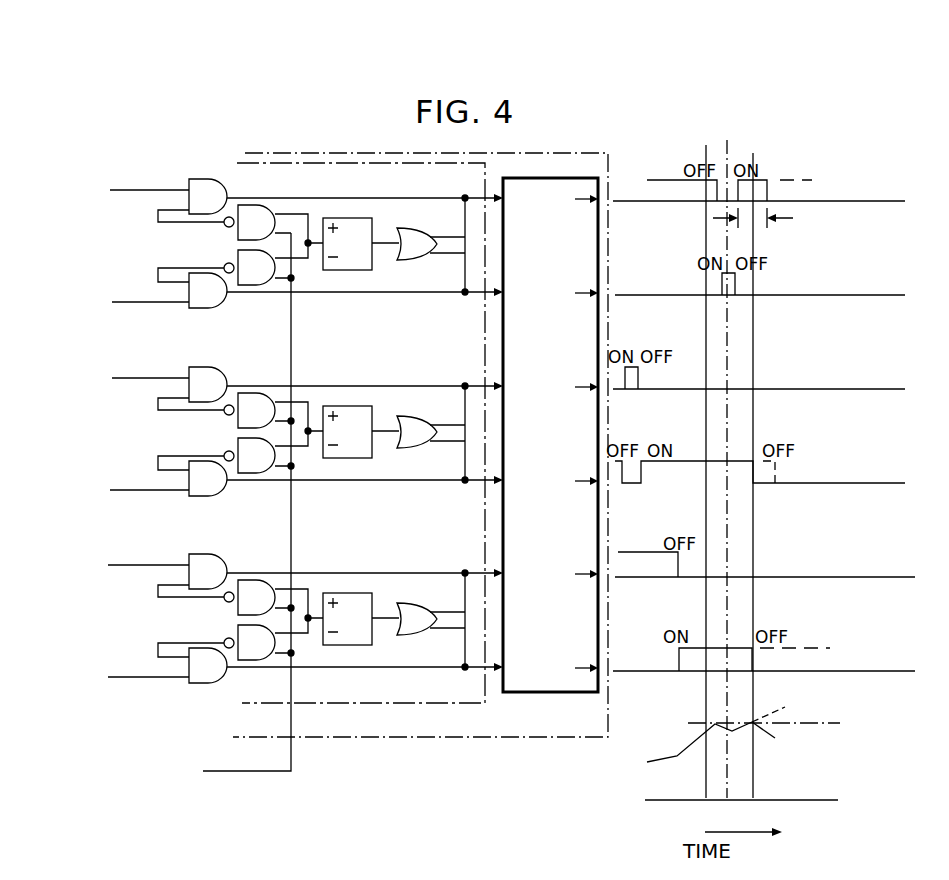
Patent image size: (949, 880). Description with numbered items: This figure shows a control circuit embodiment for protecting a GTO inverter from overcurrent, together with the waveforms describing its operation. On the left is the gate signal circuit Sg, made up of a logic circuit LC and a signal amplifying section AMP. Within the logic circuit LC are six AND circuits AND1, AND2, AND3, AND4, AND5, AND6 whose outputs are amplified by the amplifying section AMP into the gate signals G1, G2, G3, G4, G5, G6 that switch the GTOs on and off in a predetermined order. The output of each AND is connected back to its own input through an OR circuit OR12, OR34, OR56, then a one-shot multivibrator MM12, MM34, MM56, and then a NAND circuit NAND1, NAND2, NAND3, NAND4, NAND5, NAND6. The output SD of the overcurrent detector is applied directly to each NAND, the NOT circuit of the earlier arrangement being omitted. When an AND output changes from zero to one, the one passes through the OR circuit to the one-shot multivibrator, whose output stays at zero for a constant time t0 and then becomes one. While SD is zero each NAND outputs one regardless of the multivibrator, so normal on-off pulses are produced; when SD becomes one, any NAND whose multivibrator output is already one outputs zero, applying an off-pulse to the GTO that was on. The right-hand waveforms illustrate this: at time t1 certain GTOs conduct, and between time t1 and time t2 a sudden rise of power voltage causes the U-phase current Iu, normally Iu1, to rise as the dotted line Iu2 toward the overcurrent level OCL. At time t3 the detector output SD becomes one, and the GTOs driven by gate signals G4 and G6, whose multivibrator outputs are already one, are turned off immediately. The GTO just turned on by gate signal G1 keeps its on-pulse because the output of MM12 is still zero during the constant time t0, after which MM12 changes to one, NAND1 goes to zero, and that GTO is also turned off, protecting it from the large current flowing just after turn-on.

The AND circuit AND1 is at (200, 179).
The AND circuit AND2 is at (217, 308).
The AND circuit AND3 is at (210, 367).
The AND circuit AND4 is at (205, 496).
The AND circuit AND5 is at (207, 554).
The AND circuit AND6 is at (200, 683).
The NAND circuit NAND1 is at (258, 205).
The NAND circuit NAND2 is at (266, 286).
The NAND circuit NAND3 is at (263, 393).
The NAND circuit NAND4 is at (237, 442).
The NAND circuit NAND5 is at (263, 580).
The NAND circuit NAND6 is at (238, 625).
The one-shot multivibrator MM12 is at (360, 217).
The one-shot multivibrator MM34 is at (360, 405).
The one-shot multivibrator MM56 is at (360, 592).
The OR circuit OR12 is at (399, 261).
The OR circuit OR34 is at (399, 449).
The OR circuit OR56 is at (399, 636).
The gate signal G1 is at (723, 199).
The gate signal G2 is at (723, 293).
The gate signal G3 is at (723, 387).
The gate signal G4 is at (723, 481).
The gate signal G5 is at (728, 573).
The gate signal G6 is at (728, 668).
The signal amplifying section AMP is at (582, 729).
The logic circuit LC is at (402, 731).
The gate signal circuit Sg is at (510, 738).
The output of overcurrent detector SD is at (257, 772).
The time t1 is at (705, 459).
The time t2 is at (733, 452).
The time t3 is at (780, 461).
The constant time t0 is at (753, 230).
The overcurrent level OCL is at (793, 725).
The U-phase current Iu is at (667, 755).
The U-phase current in normal time Iu1 is at (770, 735).
The increased U-phase current Iu2 is at (765, 693).